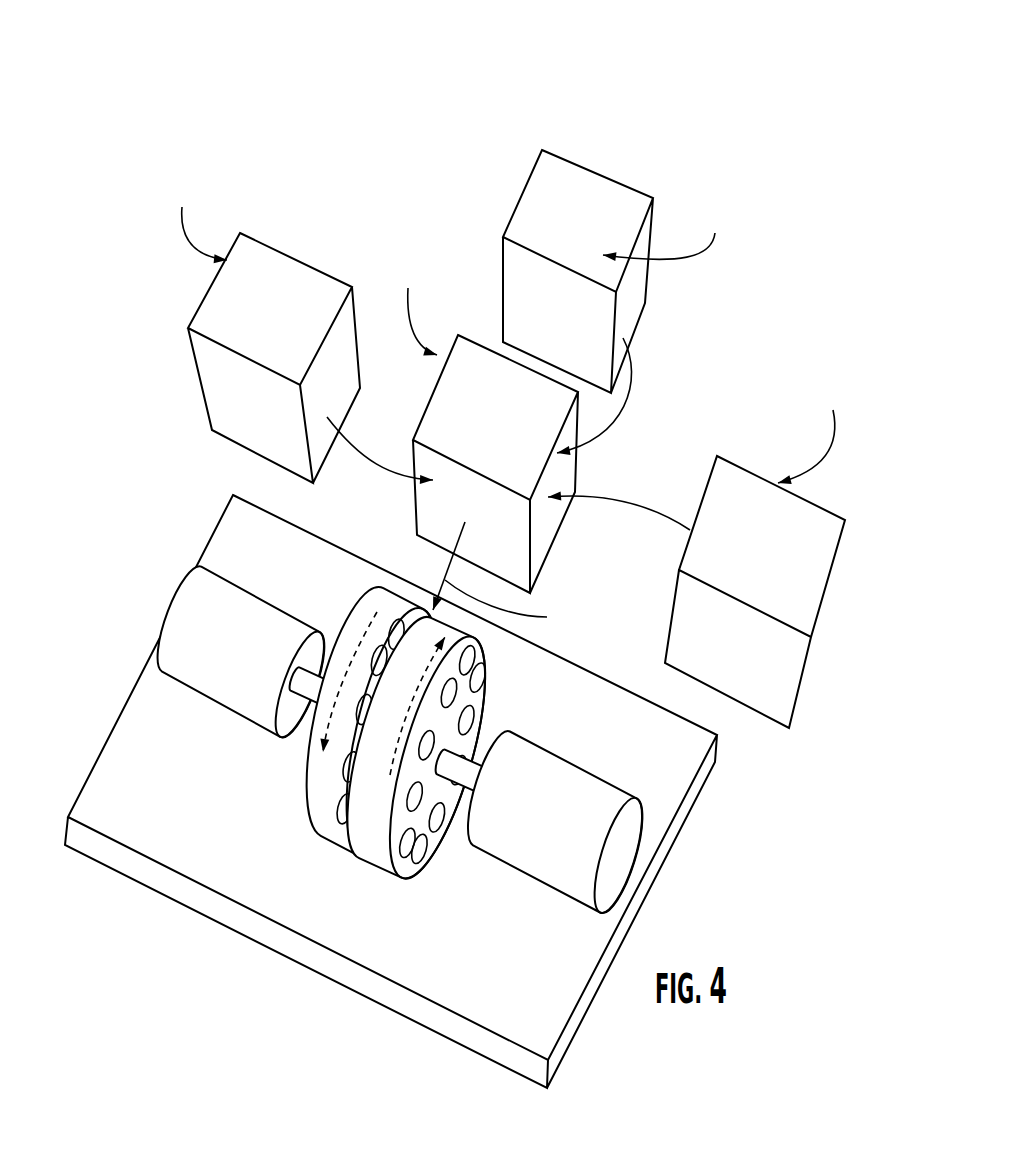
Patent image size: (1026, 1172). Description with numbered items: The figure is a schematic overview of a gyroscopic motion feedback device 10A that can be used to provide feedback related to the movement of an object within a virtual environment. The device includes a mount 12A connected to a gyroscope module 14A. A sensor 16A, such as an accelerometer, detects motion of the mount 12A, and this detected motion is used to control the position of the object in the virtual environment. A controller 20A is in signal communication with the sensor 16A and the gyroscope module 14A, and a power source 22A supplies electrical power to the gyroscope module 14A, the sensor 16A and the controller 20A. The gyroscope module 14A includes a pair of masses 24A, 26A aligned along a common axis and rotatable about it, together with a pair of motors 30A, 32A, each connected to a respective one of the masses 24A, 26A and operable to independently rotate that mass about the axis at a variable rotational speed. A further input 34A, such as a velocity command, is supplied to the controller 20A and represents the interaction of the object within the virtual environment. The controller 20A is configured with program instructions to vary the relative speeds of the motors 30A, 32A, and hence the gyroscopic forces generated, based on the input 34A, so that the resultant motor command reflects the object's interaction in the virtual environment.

The gyroscopic motion feedback device 10A is at (105, 113).
The mount 12A is at (132, 860).
The gyroscope module 14A is at (152, 568).
The sensor 16A is at (260, 273).
The controller 20A is at (518, 533).
The power source 22A is at (817, 555).
The mass 24A is at (317, 805).
The mass 26A is at (380, 853).
The motor 30A is at (177, 638).
The motor 32A is at (555, 783).
The input 34A is at (563, 177).